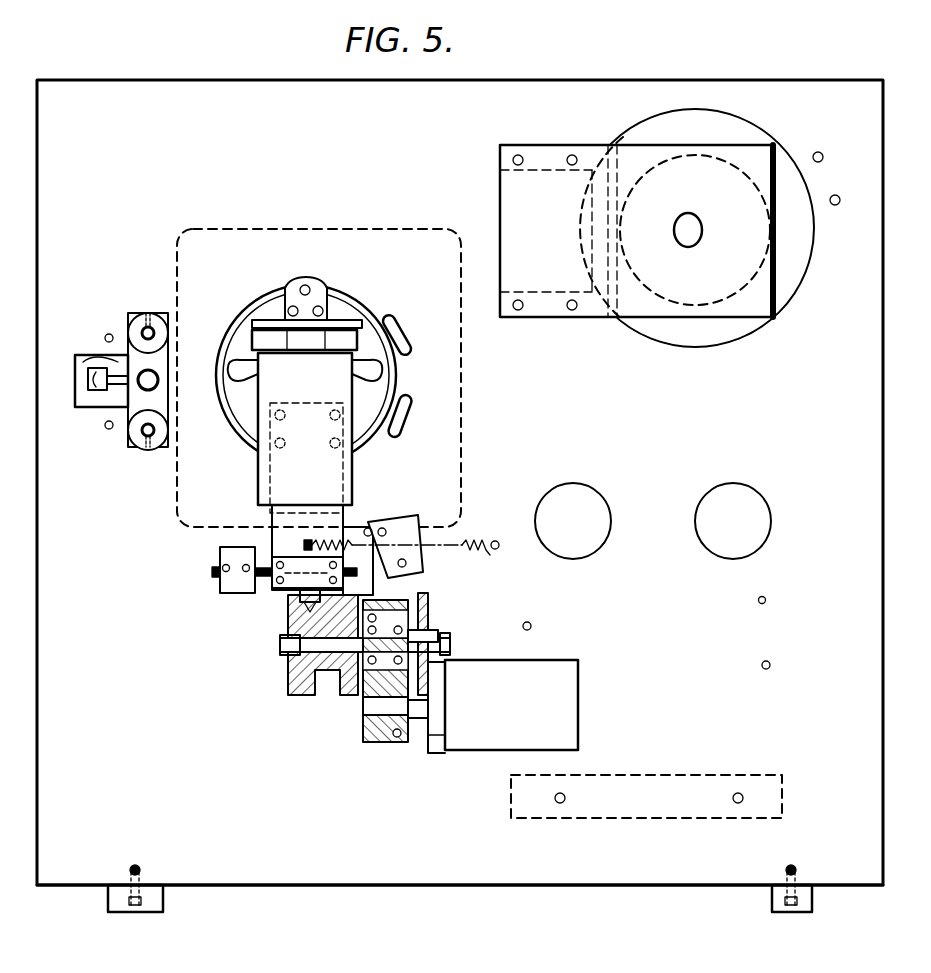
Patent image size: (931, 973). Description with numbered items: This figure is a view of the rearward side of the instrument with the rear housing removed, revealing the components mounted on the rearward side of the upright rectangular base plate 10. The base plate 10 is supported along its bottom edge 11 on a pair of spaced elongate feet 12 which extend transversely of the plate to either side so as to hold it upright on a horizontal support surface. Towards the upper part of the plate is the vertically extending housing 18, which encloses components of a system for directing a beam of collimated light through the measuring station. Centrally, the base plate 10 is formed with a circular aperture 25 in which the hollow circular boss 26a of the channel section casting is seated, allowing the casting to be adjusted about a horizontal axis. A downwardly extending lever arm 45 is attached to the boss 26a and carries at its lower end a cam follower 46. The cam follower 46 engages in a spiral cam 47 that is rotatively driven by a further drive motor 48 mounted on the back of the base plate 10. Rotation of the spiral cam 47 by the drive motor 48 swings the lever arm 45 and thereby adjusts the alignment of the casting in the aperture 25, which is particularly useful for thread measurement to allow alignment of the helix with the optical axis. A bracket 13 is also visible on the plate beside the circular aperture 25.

The base plate 10 is at (760, 90).
The bottom edge 11 is at (388, 885).
The elongate feet 12 is at (148, 912).
The bracket 13 is at (121, 381).
The vertically extending housing 18 is at (638, 305).
The circular aperture 25 is at (394, 392).
The hollow circular boss 26a is at (372, 408).
The lever arm 45 is at (283, 532).
The cam follower 46 is at (283, 607).
The spiral cam 47 is at (290, 676).
The drive motor 48 is at (578, 697).